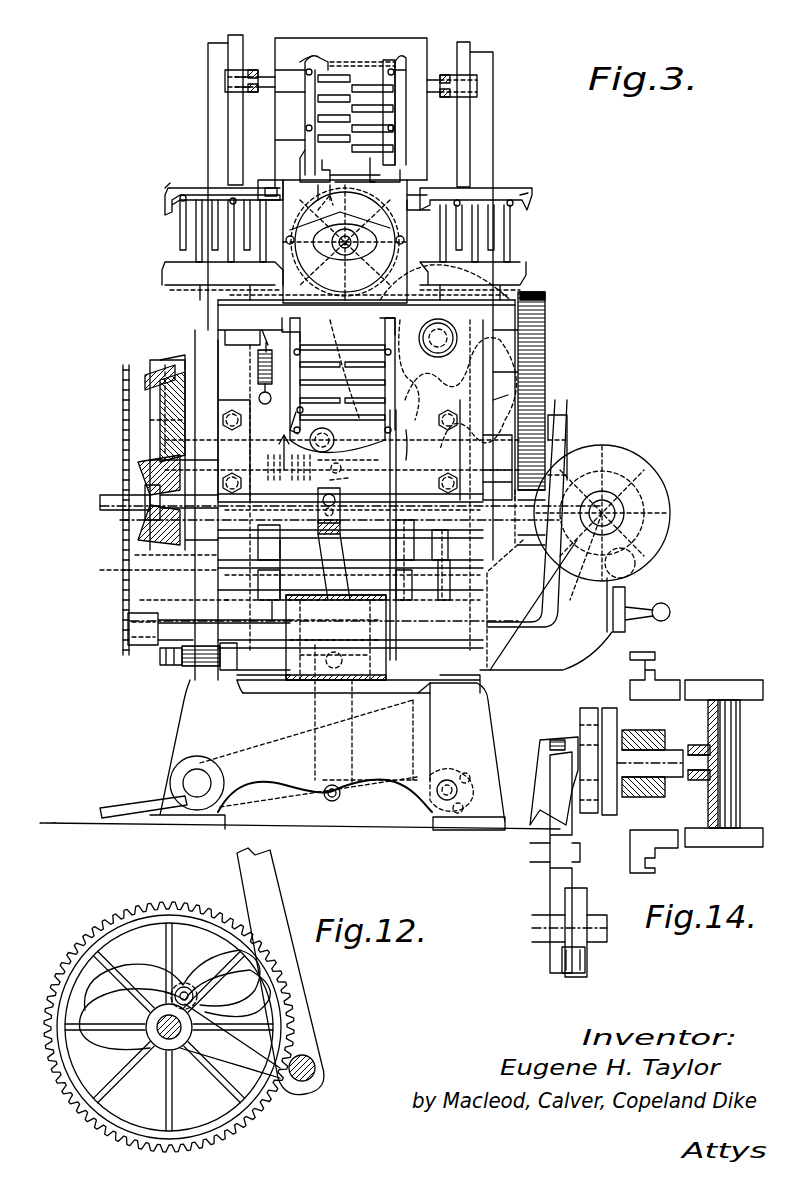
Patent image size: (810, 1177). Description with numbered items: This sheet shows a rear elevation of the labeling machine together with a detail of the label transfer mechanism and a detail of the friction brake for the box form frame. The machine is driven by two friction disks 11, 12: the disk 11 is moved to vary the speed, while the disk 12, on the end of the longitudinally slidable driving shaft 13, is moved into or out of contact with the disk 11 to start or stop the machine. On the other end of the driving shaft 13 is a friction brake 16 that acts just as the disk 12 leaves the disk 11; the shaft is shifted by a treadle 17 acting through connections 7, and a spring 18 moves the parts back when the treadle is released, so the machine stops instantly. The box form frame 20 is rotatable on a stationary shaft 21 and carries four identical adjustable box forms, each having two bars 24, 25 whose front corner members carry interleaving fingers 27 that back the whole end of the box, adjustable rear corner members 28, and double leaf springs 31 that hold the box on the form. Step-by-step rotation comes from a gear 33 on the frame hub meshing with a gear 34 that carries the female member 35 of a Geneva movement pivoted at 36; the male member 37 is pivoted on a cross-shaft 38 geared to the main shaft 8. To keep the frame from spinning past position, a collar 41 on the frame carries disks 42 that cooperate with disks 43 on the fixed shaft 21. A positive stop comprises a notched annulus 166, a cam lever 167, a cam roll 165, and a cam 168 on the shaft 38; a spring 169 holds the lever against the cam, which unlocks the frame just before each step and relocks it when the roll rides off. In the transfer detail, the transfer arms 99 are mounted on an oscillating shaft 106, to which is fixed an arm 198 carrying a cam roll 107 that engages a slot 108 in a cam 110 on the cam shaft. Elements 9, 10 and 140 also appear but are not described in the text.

In FIG. 3, the connections 7 is at (357, 797).
In FIG. 3, the main shaft 8 is at (414, 445).
In FIG. 12, the main shaft 8 is at (158, 1030).
In FIG. 3, the gear 9 is at (547, 368).
In FIG. 3, the bearing block 10 is at (518, 488).
In FIG. 3, the friction disk 11 is at (612, 488).
In FIG. 3, the friction disk 12 is at (563, 425).
In FIG. 3, the driving shaft 13 is at (520, 540).
In FIG. 3, the friction brake 16 is at (160, 535).
In FIG. 3, the treadle 17 is at (140, 806).
In FIG. 3, the spring 18 is at (284, 454).
In FIG. 3, the box form frame 20 is at (430, 183).
In FIG. 14, the box form frame 20 is at (668, 688).
In FIG. 14, the stationary shaft 21 is at (700, 770).
In FIG. 3, the bar 24 is at (272, 184).
In FIG. 3, the bar 25 is at (262, 312).
In FIG. 3, the fingers 27 is at (392, 75).
In FIG. 3, the rear corner members 28 is at (307, 62).
In FIG. 3, the double leaf springs 31 is at (398, 118).
In FIG. 14, the gear 33 is at (610, 708).
In FIG. 3, the gear 34 is at (532, 298).
In FIG. 3, the Geneva movement member 35 is at (495, 352).
In FIG. 3, the pivot 36 is at (436, 345).
In FIG. 3, the Geneva movement member 37 is at (382, 468).
In FIG. 3, the cross-shaft 38 is at (339, 440).
In FIG. 14, the cross-shaft 38 is at (540, 932).
In FIG. 3, the collar 41 is at (385, 188).
In FIG. 14, the collar 41 is at (712, 715).
In FIG. 3, the disks 42 is at (286, 246).
In FIG. 14, the disks 42 is at (737, 735).
In FIG. 3, the disks 43 is at (355, 167).
In FIG. 14, the disks 43 is at (737, 768).
In FIG. 12, the transfer arms 99 is at (275, 906).
In FIG. 12, the oscillating shaft 106 is at (302, 1082).
In FIG. 12, the cam roll 107 is at (156, 967).
In FIG. 12, the slot 108 is at (84, 1088).
In FIG. 12, the cam 110 is at (84, 1112).
In FIG. 3, the slide block 140 is at (395, 512).
In FIG. 3, the cam roll 165 is at (288, 428).
In FIG. 14, the cam roll 165 is at (578, 960).
In FIG. 3, the notched annulus 166 is at (330, 210).
In FIG. 14, the notched annulus 166 is at (584, 710).
In FIG. 3, the cam lever 167 is at (268, 348).
In FIG. 14, the cam lever 167 is at (552, 885).
In FIG. 3, the cam 168 is at (402, 512).
In FIG. 14, the cam 168 is at (580, 903).
In FIG. 3, the spring 169 is at (262, 386).
In FIG. 12, the arm 198 is at (190, 983).